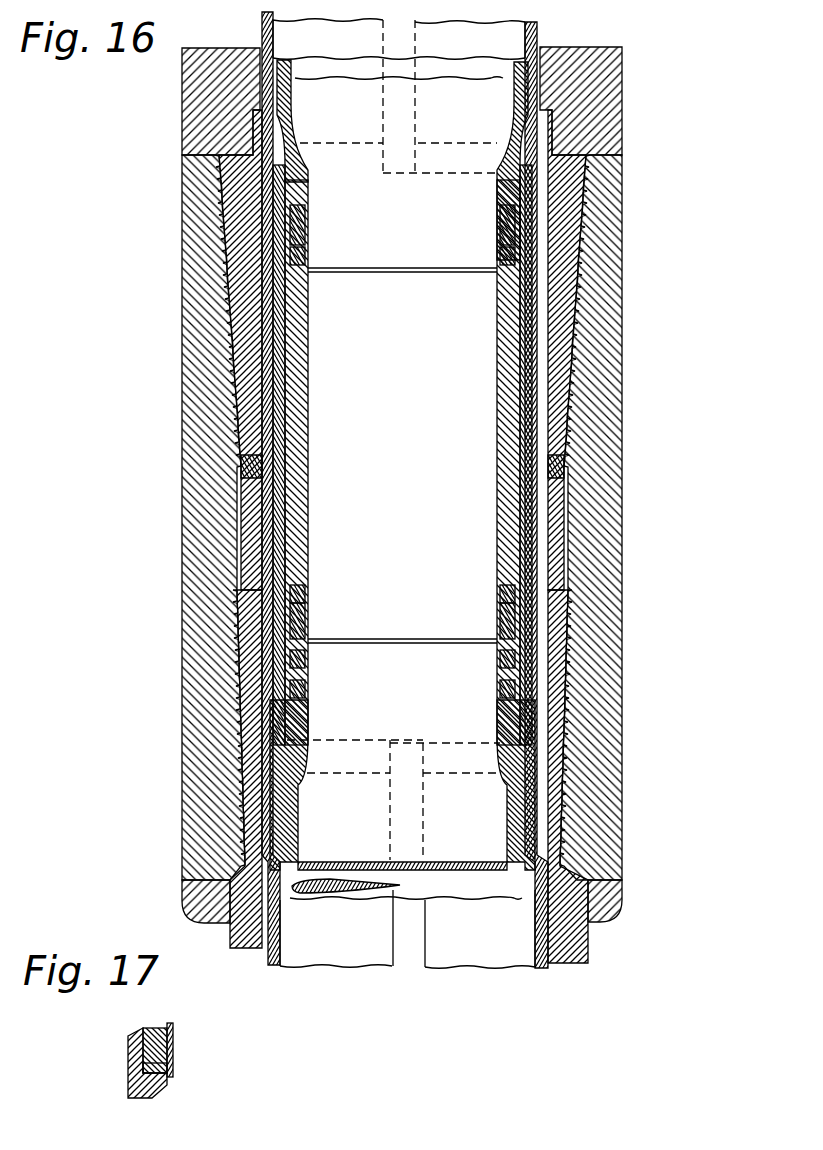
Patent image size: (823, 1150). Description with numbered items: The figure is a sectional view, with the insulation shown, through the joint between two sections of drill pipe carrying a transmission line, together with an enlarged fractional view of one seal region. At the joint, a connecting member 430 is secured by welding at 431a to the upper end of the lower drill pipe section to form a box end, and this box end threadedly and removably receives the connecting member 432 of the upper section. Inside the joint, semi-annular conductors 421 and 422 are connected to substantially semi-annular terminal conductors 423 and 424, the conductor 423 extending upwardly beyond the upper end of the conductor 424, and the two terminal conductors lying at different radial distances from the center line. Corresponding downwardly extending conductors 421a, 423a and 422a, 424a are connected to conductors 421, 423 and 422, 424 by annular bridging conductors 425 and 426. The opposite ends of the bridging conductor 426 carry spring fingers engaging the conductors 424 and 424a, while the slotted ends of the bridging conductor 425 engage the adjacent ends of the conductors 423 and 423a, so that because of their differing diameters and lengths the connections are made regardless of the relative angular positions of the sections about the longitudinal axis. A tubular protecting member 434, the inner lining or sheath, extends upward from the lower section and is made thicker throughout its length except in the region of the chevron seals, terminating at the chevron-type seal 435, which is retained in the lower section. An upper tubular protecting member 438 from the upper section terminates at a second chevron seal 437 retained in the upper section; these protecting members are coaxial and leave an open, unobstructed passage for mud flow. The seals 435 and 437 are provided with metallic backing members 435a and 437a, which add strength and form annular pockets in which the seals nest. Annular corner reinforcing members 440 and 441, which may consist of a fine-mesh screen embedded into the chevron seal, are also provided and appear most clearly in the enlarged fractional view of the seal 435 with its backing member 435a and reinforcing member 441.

In FIG. 16, the semi-annular conductor 421 is at (350, 962).
In FIG. 16, the downwardly extending conductor 421a is at (262, 27).
In FIG. 16, the semi-annular conductor 422 is at (490, 962).
In FIG. 16, the downwardly extending conductor 422a is at (537, 25).
In FIG. 16, the semi-annular terminal conductor 423 is at (258, 763).
In FIG. 16, the downwardly extending conductor 423a is at (258, 217).
In FIG. 16, the semi-annular terminal conductor 424 is at (525, 720).
In FIG. 16, the downwardly extending conductor 424a is at (516, 210).
In FIG. 16, the annular bridging conductor 425 is at (280, 433).
In FIG. 16, the annular bridging conductor 426 is at (560, 408).
In FIG. 16, the connecting member 430 is at (205, 472).
In FIG. 16, the weld 431a is at (605, 915).
In FIG. 16, the connecting member 432 is at (190, 120).
In FIG. 16, the tubular protecting member 434 is at (300, 488).
In FIG. 16, the chevron seal 435 is at (305, 620).
In FIG. 17, the chevron seal 435 is at (160, 1030).
In FIG. 16, the metallic backing member 435a is at (305, 660).
In FIG. 17, the metallic backing member 435a is at (155, 1092).
In FIG. 16, the chevron seal 437 is at (305, 232).
In FIG. 16, the metallic backing member 437a is at (305, 256).
In FIG. 16, the upper tubular protecting member 438 is at (291, 118).
In FIG. 16, the annular corner reinforcing member 440 is at (305, 594).
In FIG. 16, the annular corner reinforcing member 441 is at (305, 690).
In FIG. 17, the annular corner reinforcing member 441 is at (168, 1066).